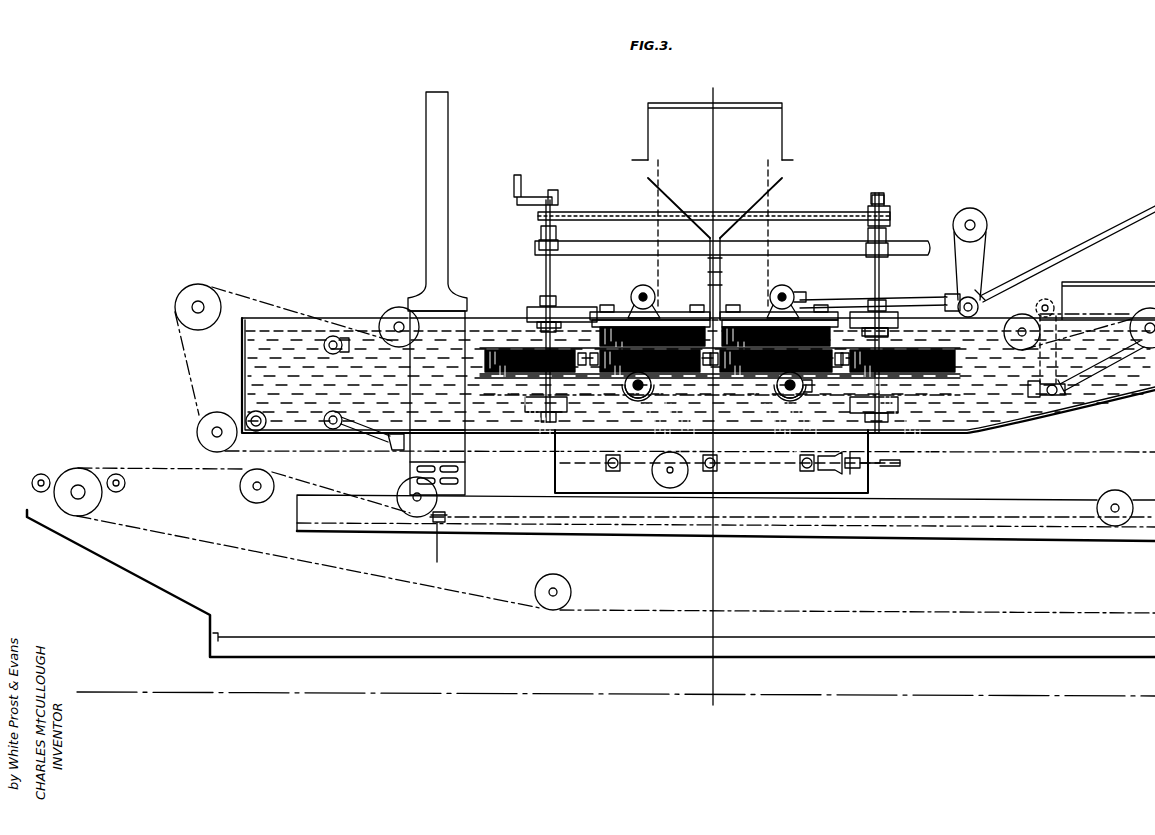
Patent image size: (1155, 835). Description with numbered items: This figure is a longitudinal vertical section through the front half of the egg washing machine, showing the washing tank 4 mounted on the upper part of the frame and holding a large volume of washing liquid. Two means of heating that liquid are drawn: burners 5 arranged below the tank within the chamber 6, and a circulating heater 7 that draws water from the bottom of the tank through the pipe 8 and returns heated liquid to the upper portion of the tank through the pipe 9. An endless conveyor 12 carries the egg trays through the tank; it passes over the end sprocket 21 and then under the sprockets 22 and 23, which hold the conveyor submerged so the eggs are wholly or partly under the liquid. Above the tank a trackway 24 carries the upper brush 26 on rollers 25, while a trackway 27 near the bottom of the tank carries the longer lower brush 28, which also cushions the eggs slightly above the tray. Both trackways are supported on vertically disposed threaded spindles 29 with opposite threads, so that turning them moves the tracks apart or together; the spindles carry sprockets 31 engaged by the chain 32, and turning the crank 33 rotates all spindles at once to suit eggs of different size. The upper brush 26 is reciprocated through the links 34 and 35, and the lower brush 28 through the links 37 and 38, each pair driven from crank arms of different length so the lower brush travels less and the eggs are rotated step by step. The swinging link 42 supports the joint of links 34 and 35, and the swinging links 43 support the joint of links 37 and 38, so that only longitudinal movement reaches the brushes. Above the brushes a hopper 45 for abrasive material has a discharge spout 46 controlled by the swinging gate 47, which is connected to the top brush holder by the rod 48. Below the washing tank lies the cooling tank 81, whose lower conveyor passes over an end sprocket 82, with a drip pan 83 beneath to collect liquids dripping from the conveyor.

The tank 4 is at (509, 431).
The burners 5 is at (658, 397).
The chamber 6 is at (876, 441).
The circulating heater 7 is at (462, 443).
The pipe 8 is at (378, 441).
The pipe 9 is at (354, 340).
The endless conveyor 12 is at (289, 314).
The end sprocket 21 is at (176, 303).
The sprocket 22 is at (399, 319).
The sprocket 23 is at (1069, 322).
The trackway 24 is at (597, 312).
The rollers 25 is at (632, 291).
The upper brush 26 is at (670, 325).
The trackway 27 is at (724, 403).
The lower brush 28 is at (658, 386).
The threaded spindles 29 is at (553, 285).
The sprockets 31 is at (889, 214).
The chain 32 is at (808, 217).
The crank 33 is at (523, 182).
The link 34 is at (904, 310).
The link 35 is at (1060, 258).
The link 37 is at (963, 386).
The link 38 is at (1100, 362).
The swinging link 42 is at (978, 250).
The swinging links 43 is at (1040, 368).
The hopper 45 is at (776, 130).
The discharge spout 46 is at (720, 258).
The swinging gate 47 is at (721, 275).
The rod 48 is at (721, 290).
The cooling tank 81 is at (848, 537).
The end sprocket 82 is at (97, 504).
The drip pan 83 is at (842, 641).